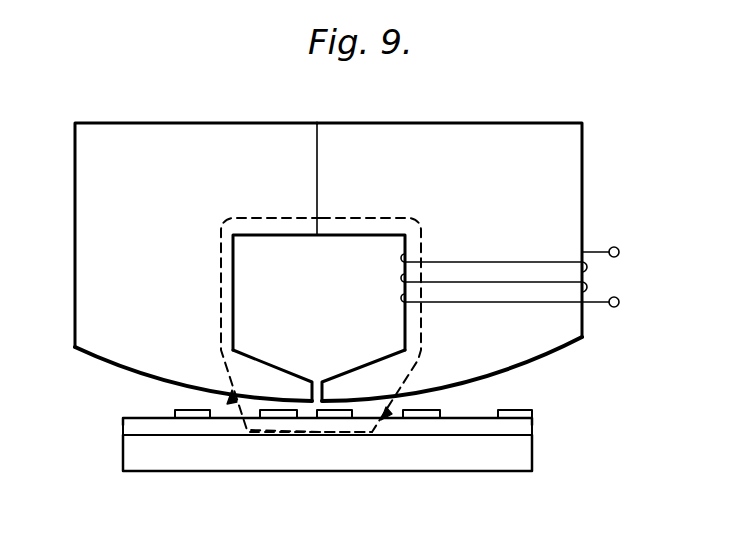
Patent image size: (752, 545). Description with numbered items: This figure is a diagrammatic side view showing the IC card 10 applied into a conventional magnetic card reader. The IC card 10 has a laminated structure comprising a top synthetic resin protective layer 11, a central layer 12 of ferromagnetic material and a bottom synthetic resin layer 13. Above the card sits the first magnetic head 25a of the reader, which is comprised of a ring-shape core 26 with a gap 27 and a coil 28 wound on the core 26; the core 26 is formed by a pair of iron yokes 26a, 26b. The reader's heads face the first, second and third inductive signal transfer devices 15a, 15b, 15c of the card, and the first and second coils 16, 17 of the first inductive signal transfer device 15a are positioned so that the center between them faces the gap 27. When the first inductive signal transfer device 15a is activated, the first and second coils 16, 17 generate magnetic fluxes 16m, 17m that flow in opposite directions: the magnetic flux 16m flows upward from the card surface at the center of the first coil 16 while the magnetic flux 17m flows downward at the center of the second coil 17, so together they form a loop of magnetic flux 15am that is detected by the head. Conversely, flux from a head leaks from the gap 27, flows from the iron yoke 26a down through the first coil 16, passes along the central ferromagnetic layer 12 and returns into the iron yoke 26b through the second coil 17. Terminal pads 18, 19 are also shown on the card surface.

The IC card 10 is at (359, 441).
The top synthetic resin protective layer 11 is at (123, 421).
The central layer of ferromagnetic material 12 is at (303, 467).
The bottom synthetic resin layer 13 is at (374, 472).
The first inductive signal transfer device 15a is at (385, 472).
The second inductive signal transfer device 15b is at (327, 453).
The third inductive signal transfer device 15c is at (411, 446).
The magnetic flux 15am is at (306, 470).
The first coil 16 is at (195, 418).
The second coil 17 is at (345, 420).
The magnetic flux 16m is at (222, 354).
The magnetic flux 17m is at (418, 360).
The terminal pad 18 is at (553, 396).
The terminal pad 19 is at (527, 412).
The first magnetic head 25a is at (392, 154).
The ring-shape core 26 is at (358, 237).
The iron yoke 26a is at (188, 130).
The iron yoke 26b is at (513, 130).
The gap 27 is at (318, 381).
The coil 28 is at (598, 303).